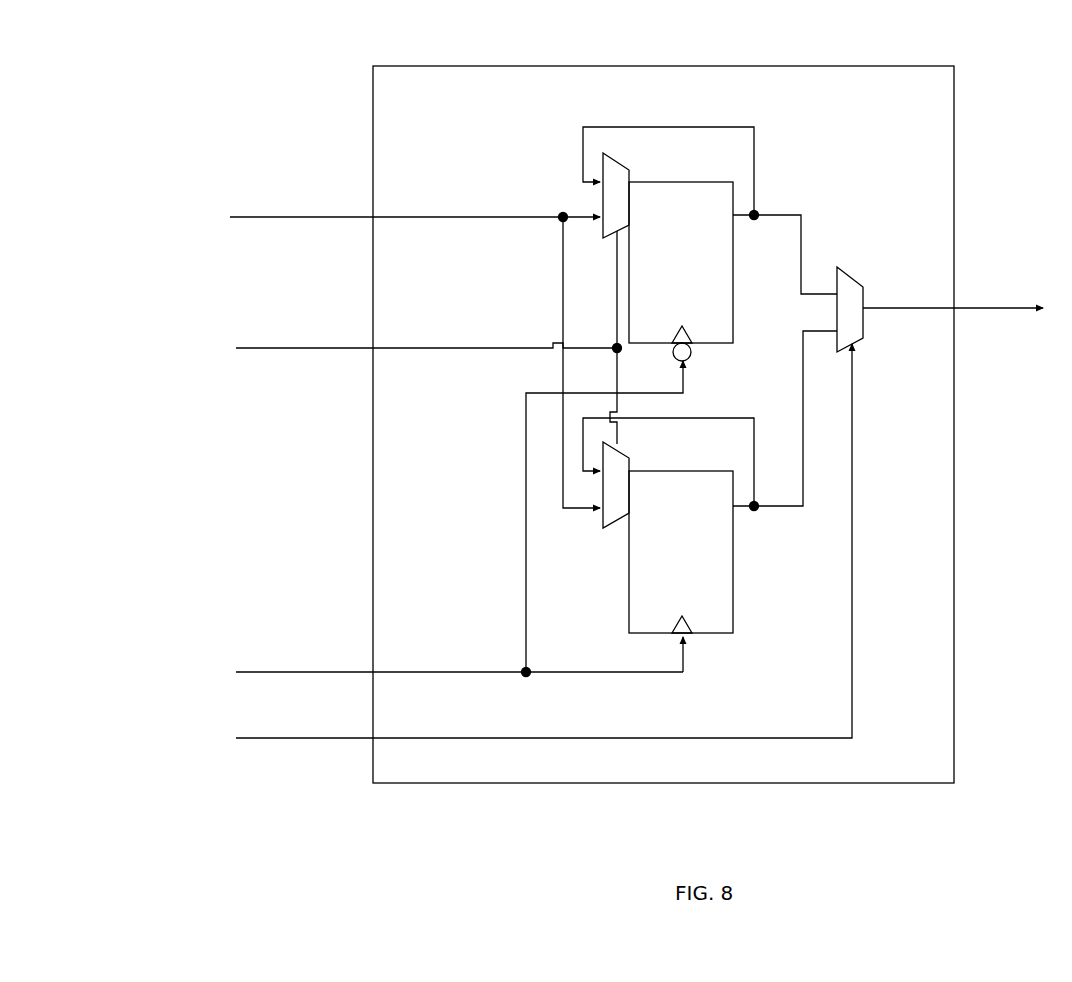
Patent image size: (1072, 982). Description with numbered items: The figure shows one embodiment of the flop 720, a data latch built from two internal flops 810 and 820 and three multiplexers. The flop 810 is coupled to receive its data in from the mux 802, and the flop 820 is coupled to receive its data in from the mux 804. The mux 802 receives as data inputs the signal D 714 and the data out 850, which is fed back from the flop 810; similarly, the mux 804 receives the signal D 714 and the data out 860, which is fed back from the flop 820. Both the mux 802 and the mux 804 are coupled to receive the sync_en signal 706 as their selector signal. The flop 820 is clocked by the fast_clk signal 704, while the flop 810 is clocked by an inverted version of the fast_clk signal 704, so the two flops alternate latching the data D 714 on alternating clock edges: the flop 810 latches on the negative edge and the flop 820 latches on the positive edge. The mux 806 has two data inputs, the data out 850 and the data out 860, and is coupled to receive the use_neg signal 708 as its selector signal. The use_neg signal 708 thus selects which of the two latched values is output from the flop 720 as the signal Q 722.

The flop 720 is at (939, 101).
The signal D 714 is at (288, 217).
The sync_en signal 706 is at (277, 348).
The fast_clk signal 704 is at (288, 672).
The use_neg signal 708 is at (255, 738).
The mux 802 is at (613, 163).
The mux 804 is at (610, 523).
The mux 806 is at (861, 287).
The flop 810 is at (681, 271).
The flop 820 is at (681, 552).
The data out 850 is at (790, 215).
The data out 860 is at (772, 508).
The signal Q 722 is at (991, 312).